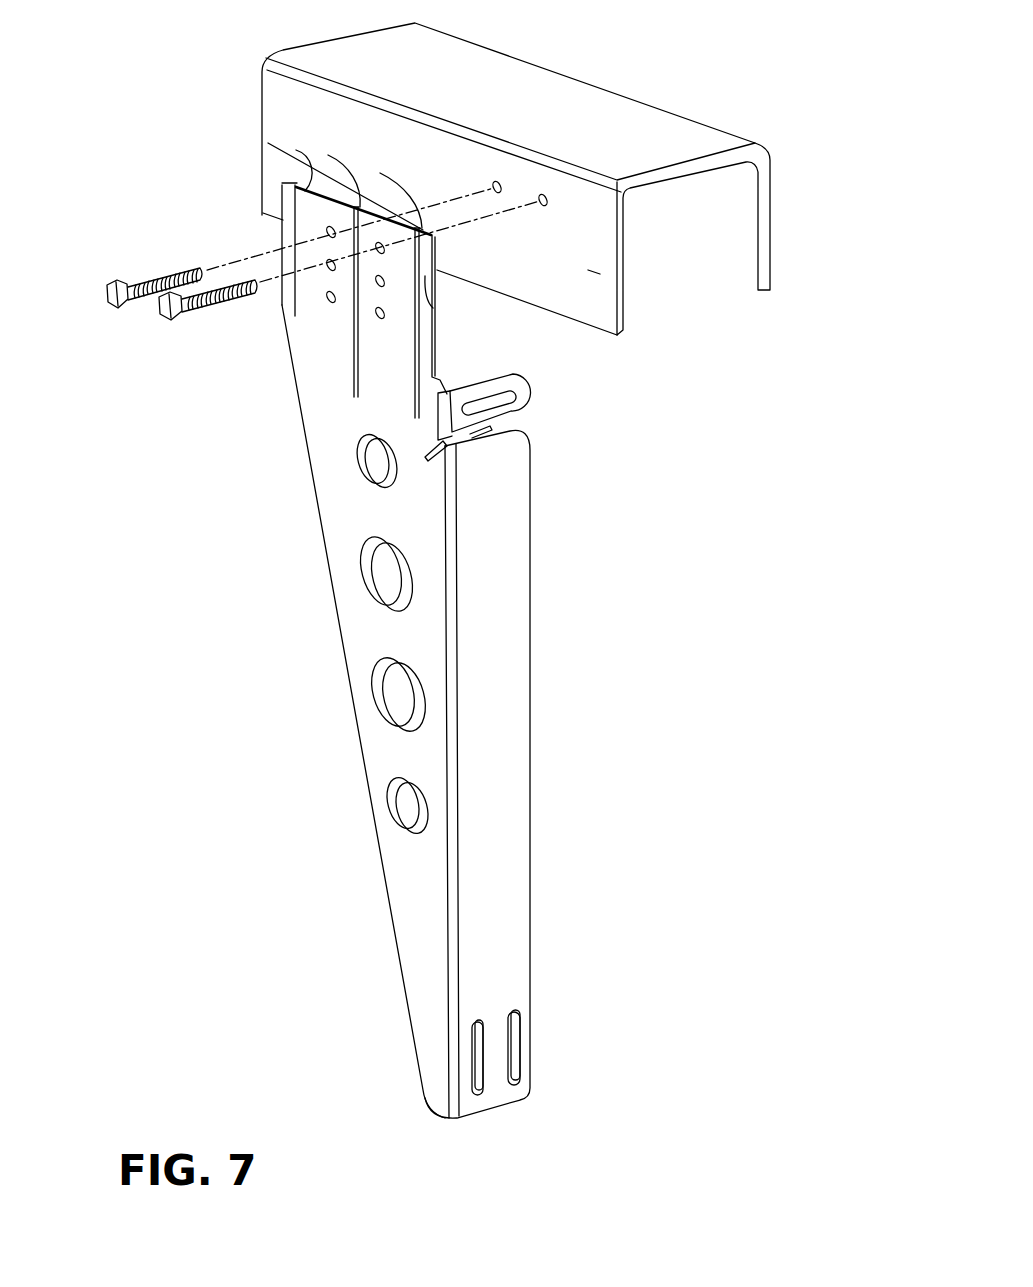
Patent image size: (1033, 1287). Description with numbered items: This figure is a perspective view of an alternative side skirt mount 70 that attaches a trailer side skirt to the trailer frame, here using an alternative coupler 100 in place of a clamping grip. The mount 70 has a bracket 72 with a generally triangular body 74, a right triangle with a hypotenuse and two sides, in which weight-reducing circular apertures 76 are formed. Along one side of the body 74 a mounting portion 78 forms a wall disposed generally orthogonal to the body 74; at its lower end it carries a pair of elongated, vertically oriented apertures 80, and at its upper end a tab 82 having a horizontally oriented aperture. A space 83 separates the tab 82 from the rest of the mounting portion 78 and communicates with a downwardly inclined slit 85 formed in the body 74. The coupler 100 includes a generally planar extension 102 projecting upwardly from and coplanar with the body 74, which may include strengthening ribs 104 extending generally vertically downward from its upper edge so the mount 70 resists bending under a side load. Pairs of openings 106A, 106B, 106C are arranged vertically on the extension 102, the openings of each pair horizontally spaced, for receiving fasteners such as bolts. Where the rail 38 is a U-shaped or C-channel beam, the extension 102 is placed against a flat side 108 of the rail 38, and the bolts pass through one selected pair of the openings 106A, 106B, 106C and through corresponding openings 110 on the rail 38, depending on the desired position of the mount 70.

The rail 38 is at (745, 140).
The openings on the rail 110 is at (542, 198).
The extension 102 is at (430, 295).
The strengthening ribs 104 is at (270, 145).
The openings 106A is at (377, 244).
The openings 106B is at (377, 277).
The openings 106C is at (378, 316).
The coupler 100 is at (283, 305).
The flat side of the rail 108 is at (588, 270).
The side skirt mount 70 is at (700, 403).
The bracket 72 is at (531, 716).
The body 74 is at (357, 632).
The circular apertures 76 is at (375, 487).
The mounting portion 78 is at (500, 829).
The elongated apertures 80 is at (478, 1022).
The tab 82 is at (520, 393).
The space 83 is at (480, 430).
The slit 85 is at (430, 458).